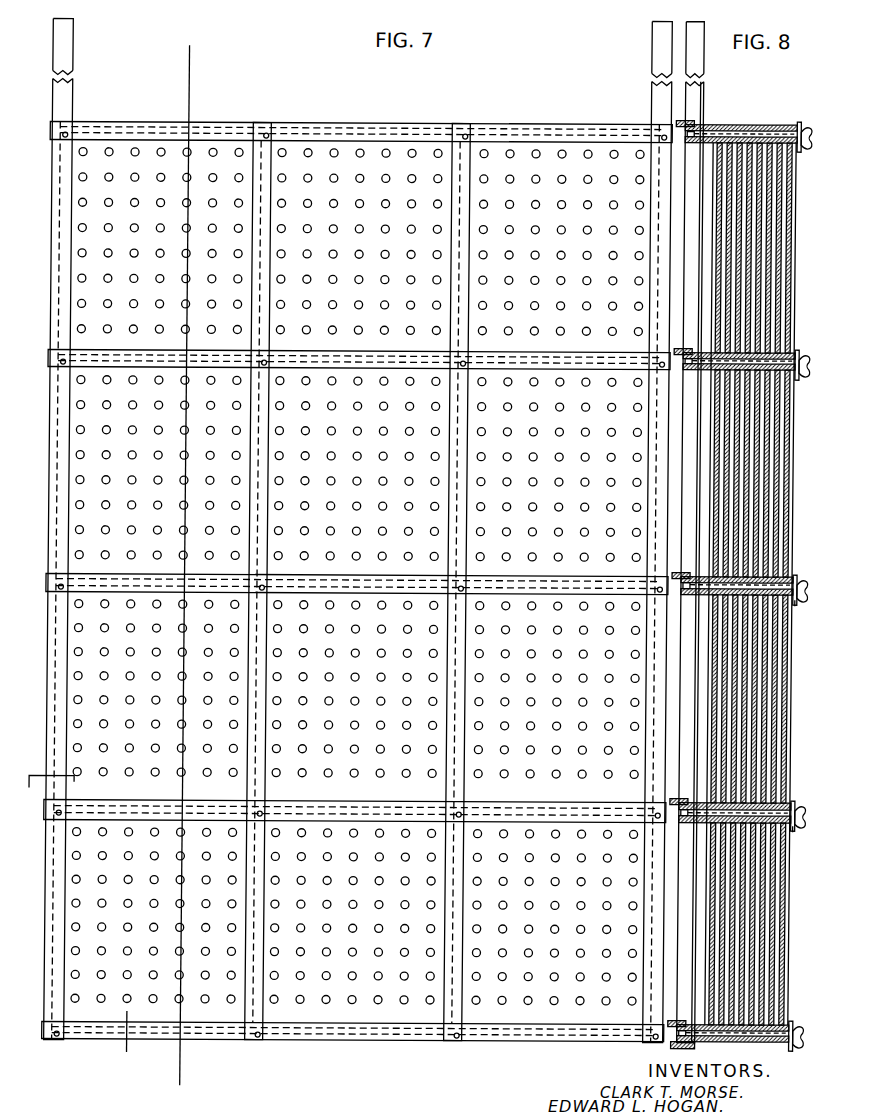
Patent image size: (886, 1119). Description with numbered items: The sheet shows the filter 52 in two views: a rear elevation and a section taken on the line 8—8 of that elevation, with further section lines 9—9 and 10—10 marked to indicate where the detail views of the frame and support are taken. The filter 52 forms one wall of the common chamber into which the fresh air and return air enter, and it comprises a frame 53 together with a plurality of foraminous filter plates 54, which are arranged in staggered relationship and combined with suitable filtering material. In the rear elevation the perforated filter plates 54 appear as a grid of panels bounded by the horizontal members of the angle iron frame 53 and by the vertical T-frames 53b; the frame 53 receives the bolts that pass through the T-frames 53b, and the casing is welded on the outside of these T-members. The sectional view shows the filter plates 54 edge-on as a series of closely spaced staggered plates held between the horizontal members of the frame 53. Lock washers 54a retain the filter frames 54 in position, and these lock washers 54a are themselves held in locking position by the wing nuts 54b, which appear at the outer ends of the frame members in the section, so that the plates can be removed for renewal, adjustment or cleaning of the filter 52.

In FIG. 8, the filter 52 is at (793, 480).
In FIG. 7, the frame 53 is at (347, 124).
In FIG. 8, the frame 53 is at (705, 112).
In FIG. 7, the T-frames 53b is at (267, 790).
In FIG. 7, the foraminous filter plates 54 is at (76, 293).
In FIG. 8, the foraminous filter plates 54 is at (788, 213).
In FIG. 8, the lock washers 54a is at (795, 576).
In FIG. 8, the wing nuts 54b is at (796, 604).
In FIG. 7, the section line 8- 8 is at (166, 1086).
In FIG. 7, the section line 9- 9 is at (76, 785).
In FIG. 7, the section line 10- 10 is at (113, 1053).